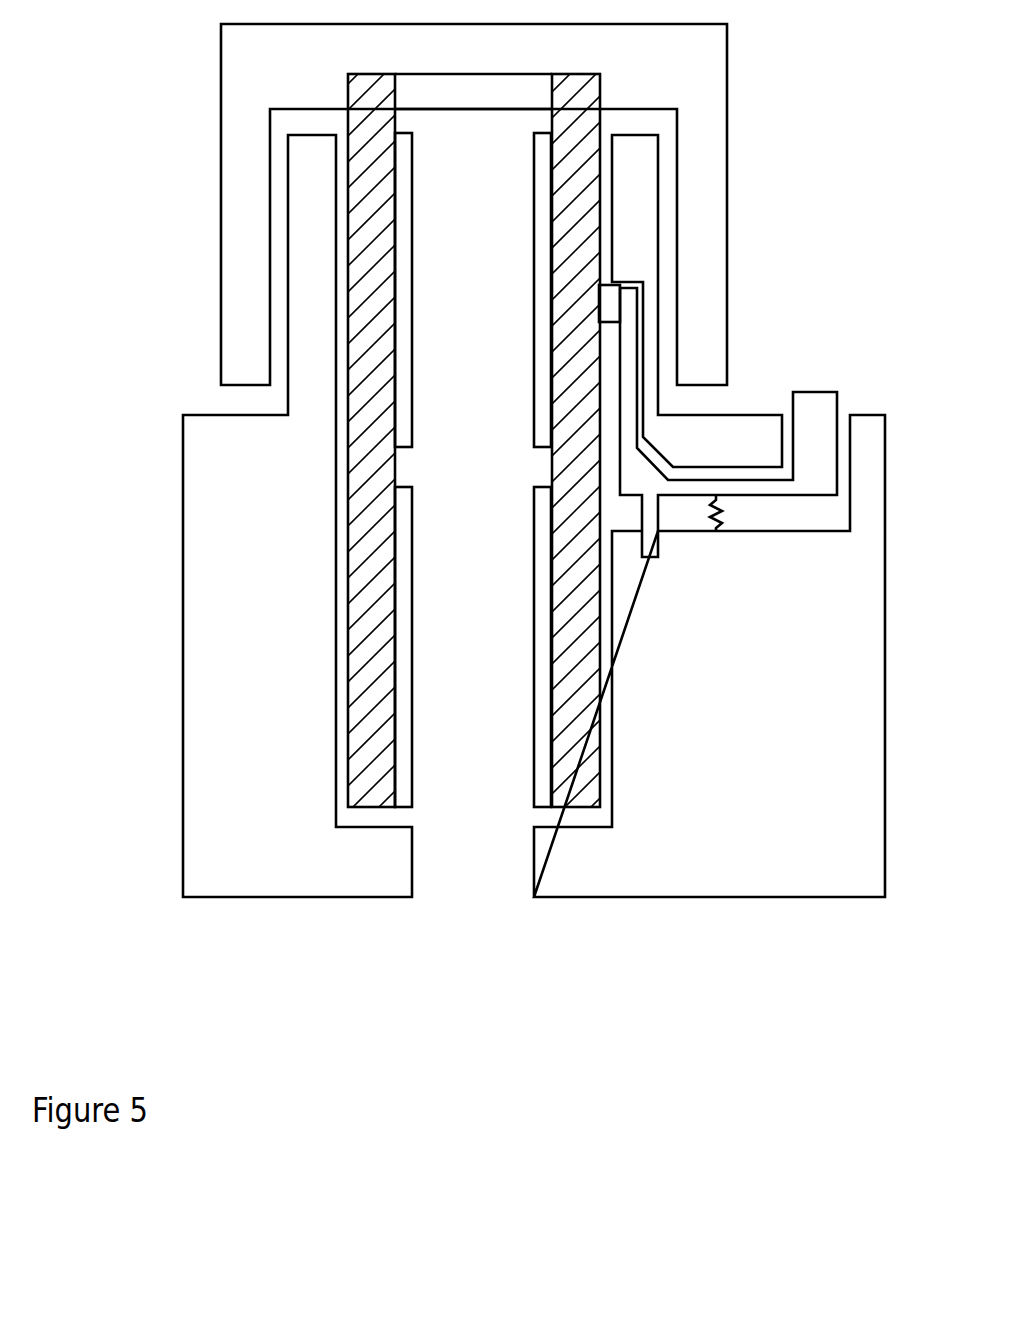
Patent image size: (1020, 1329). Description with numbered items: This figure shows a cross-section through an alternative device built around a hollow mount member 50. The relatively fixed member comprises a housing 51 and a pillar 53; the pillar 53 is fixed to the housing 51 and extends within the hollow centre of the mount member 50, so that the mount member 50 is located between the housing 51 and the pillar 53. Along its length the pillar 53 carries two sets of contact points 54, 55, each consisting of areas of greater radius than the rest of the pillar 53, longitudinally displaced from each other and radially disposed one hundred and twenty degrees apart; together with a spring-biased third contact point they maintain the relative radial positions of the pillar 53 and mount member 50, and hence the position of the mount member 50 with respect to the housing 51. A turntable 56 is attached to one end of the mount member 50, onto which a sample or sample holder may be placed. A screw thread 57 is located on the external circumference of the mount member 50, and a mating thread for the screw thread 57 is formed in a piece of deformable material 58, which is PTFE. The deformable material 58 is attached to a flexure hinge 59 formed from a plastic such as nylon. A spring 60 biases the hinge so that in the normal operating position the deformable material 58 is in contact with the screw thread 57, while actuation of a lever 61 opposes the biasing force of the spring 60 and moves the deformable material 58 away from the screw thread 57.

The hollow mount member 50 is at (577, 740).
The housing 51 is at (183, 794).
The pillar 53 is at (488, 827).
The contact point 54 is at (405, 115).
The contact point 55 is at (411, 466).
The turntable 56 is at (221, 40).
The screw thread 57 is at (598, 625).
The deformable material 58 is at (608, 302).
The flexure hinge 59 is at (667, 513).
The spring 60 is at (718, 532).
The lever 61 is at (837, 402).